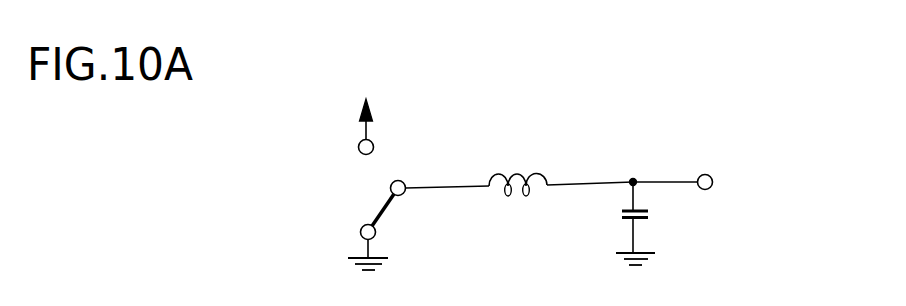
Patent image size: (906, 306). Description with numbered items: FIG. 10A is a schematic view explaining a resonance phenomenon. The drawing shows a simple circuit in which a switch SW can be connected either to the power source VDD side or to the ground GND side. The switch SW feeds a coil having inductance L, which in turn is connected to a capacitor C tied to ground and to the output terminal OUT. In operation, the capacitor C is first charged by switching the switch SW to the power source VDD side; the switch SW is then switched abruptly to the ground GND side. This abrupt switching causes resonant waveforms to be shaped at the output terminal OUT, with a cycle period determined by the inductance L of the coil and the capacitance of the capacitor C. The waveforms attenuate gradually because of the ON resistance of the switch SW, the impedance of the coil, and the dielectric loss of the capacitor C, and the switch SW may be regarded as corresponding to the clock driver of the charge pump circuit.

The switch SW is at (365, 185).
The inductance of the coil L is at (518, 169).
The capacitor C is at (644, 223).
The power source VDD is at (400, 119).
The ground GND is at (402, 262).
The output terminal OUT is at (741, 180).